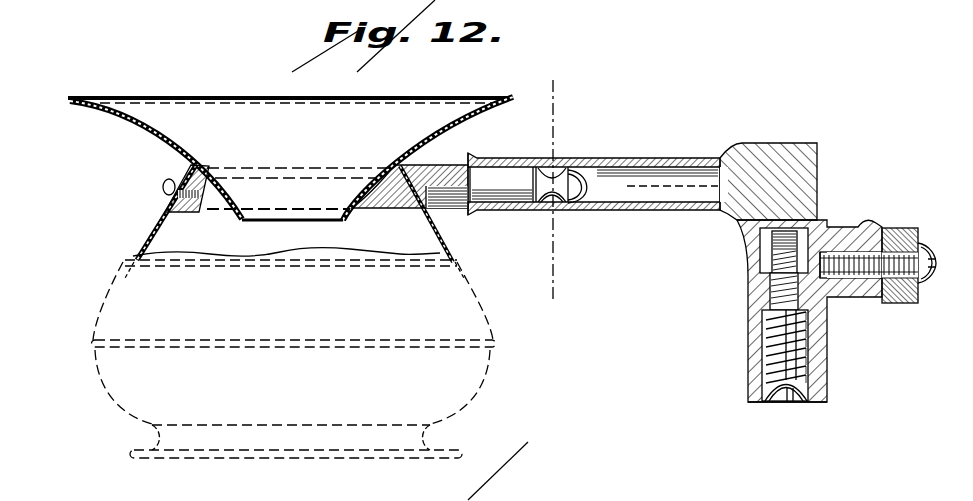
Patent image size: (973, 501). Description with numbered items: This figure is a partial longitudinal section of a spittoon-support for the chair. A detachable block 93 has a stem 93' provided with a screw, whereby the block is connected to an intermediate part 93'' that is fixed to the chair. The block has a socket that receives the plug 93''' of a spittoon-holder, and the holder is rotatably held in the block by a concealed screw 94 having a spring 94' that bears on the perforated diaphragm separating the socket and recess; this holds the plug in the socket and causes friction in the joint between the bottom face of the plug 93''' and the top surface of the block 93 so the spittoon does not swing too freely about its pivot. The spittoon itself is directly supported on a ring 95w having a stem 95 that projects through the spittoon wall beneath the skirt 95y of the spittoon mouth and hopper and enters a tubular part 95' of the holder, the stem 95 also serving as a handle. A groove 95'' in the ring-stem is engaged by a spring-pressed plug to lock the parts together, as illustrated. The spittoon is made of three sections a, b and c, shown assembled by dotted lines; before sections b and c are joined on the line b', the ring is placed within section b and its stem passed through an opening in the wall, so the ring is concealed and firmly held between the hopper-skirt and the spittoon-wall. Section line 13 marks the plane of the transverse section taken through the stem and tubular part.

The section line 13 is at (550, 194).
The detachable block 93 is at (827, 311).
The stem 93' is at (871, 246).
The intermediate part 93'' is at (922, 280).
The plug of spittoon-holder 93''' is at (796, 181).
The concealed screw 94 is at (791, 419).
The spring 94' is at (751, 346).
The stem 95 is at (294, 295).
The tubular part 95' is at (594, 173).
The groove 95'' is at (546, 213).
The ring 95w is at (167, 205).
The skirt 95y is at (243, 221).
The spittoon section a is at (165, 145).
The spittoon section b is at (291, 213).
The joining line b' is at (284, 265).
The spittoon section c is at (107, 288).